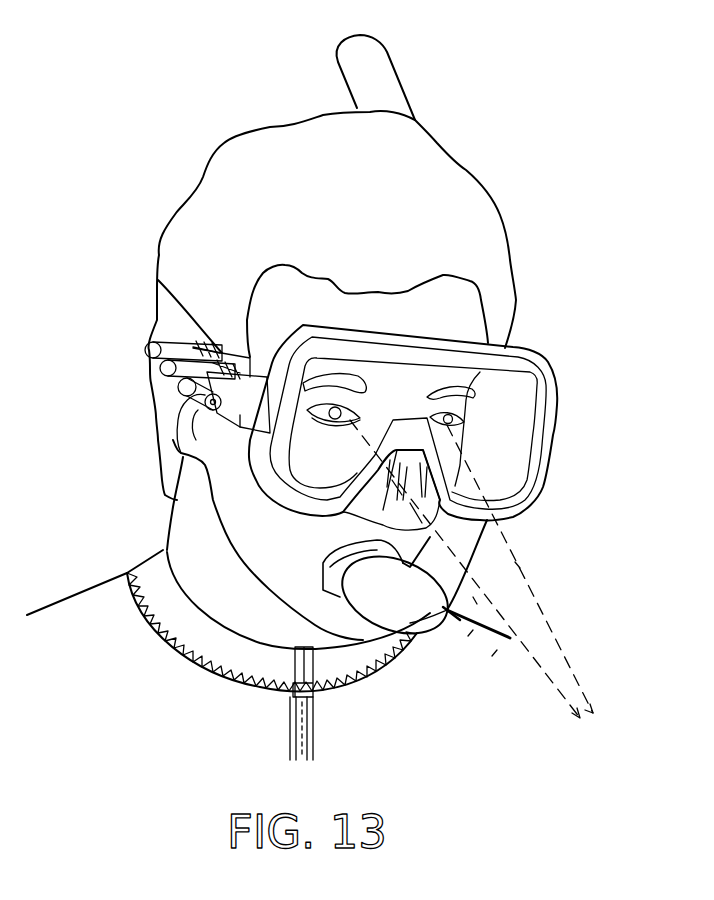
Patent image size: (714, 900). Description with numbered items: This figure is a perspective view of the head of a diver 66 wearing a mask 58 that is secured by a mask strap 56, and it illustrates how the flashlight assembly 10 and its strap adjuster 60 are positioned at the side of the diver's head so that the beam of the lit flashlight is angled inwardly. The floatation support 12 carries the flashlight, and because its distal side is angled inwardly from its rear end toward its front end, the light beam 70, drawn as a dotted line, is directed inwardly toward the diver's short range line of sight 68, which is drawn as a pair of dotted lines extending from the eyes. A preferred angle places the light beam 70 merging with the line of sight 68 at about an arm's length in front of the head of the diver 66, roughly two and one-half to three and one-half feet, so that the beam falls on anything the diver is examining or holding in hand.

The diving mask assembly 10 is at (120, 393).
The floatation support 12 is at (228, 352).
The mask strap 56 is at (160, 312).
The mask 58 is at (547, 423).
The strap adjuster 60 is at (147, 350).
The head of a diver 66 is at (460, 238).
The short range line of sight 68 is at (515, 562).
The light beam 70 is at (497, 650).